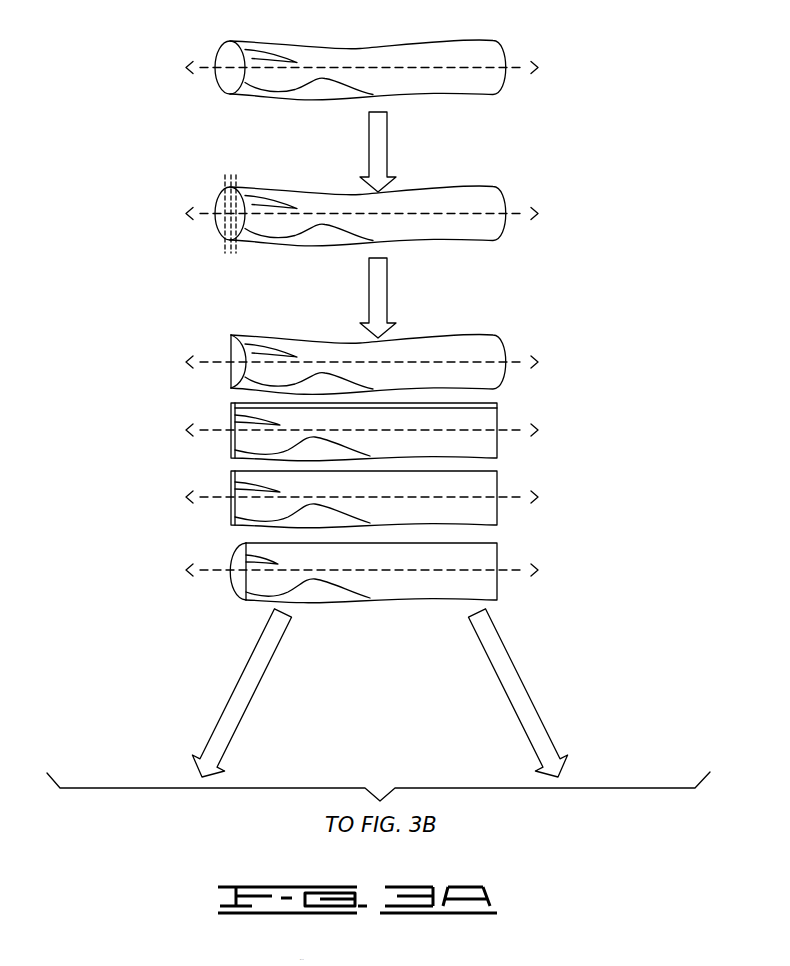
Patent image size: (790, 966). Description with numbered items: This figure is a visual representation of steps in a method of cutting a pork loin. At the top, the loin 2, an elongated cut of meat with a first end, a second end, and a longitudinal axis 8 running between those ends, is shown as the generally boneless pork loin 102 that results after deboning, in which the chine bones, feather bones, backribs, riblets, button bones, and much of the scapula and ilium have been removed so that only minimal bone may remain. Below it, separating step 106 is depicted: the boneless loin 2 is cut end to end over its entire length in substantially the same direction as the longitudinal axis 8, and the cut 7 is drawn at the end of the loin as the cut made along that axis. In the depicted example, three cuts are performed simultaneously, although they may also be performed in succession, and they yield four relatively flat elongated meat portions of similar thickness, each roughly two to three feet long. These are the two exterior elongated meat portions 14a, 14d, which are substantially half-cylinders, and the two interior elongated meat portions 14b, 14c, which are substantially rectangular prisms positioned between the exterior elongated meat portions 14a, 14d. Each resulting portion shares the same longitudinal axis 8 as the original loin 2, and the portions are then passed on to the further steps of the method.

The loin 2 is at (483, 42).
The cut 7 is at (223, 181).
The longitudinal axis 8 is at (207, 66).
The exterior elongated meat portion 14a is at (470, 335).
The interior elongated meat portion 14b is at (497, 410).
The interior elongated meat portion 14c is at (497, 482).
The exterior elongated meat portion 14d is at (497, 548).
The generally boneless pork loin 102 is at (560, 41).
The separating step 106 is at (565, 201).